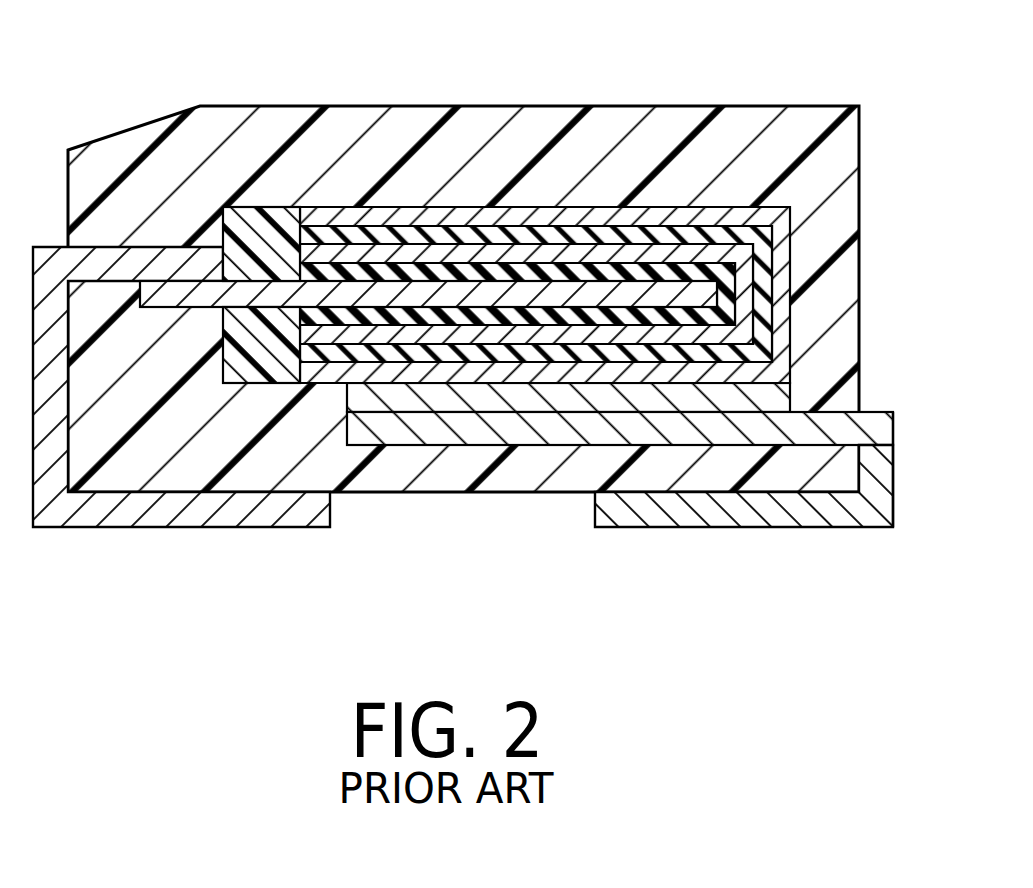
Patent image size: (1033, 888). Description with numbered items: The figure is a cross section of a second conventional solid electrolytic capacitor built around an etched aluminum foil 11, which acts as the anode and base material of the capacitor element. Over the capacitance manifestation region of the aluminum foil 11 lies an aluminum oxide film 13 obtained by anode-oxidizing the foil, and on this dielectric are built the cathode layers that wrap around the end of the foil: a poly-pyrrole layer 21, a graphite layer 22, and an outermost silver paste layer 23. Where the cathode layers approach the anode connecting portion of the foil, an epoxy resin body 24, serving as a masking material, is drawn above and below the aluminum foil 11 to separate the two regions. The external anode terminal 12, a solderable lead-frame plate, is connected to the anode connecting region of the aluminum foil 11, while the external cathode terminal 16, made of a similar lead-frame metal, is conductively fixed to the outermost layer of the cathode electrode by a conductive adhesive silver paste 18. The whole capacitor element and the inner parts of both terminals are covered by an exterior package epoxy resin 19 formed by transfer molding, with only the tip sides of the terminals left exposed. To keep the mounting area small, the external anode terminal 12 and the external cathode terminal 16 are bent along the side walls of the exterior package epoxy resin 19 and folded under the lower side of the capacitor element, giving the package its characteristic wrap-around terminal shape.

The aluminum foil 11 is at (465, 311).
The external anode terminal 12 is at (123, 497).
The aluminum oxide film 13 is at (650, 270).
The external cathode terminal 16 is at (881, 517).
The silver paste 18 is at (395, 397).
The exterior package epoxy resin 19 is at (742, 137).
The poly-pyrrole layer 21 is at (554, 252).
The graphite layer 22 is at (460, 234).
The silver paste layer 23 is at (358, 215).
The epoxy resin body 24 is at (262, 232).